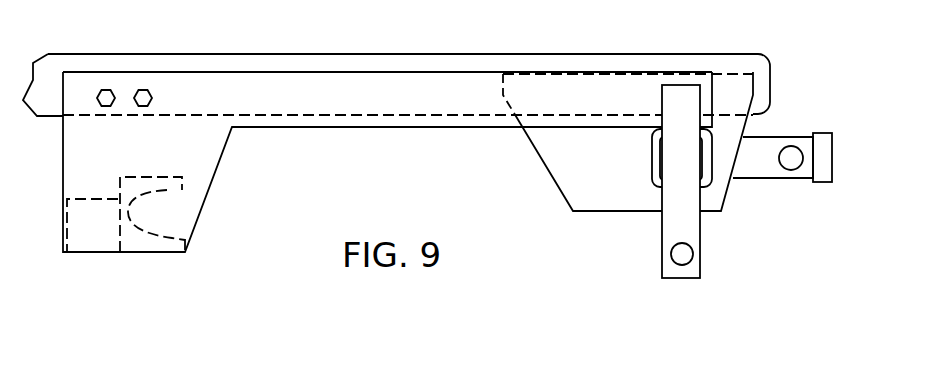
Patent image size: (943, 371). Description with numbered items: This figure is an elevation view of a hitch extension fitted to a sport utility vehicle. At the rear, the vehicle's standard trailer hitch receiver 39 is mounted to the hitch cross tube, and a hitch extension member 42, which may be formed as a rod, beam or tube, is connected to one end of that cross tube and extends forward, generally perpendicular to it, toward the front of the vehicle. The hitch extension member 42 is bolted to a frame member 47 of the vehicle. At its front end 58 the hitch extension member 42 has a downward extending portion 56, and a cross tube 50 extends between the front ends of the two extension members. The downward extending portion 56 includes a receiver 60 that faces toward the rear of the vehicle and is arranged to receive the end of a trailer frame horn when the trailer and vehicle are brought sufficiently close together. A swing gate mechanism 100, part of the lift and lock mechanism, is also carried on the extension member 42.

The standard trailer hitch receiver 39 is at (790, 177).
The hitch extension member 42 is at (310, 72).
The frame member 47 is at (418, 57).
The cross tube 50 is at (97, 250).
The downward extending portion 56 is at (220, 155).
The front end 58 is at (83, 71).
The receiver 60 is at (170, 192).
The swing gate mechanism 100 is at (702, 237).